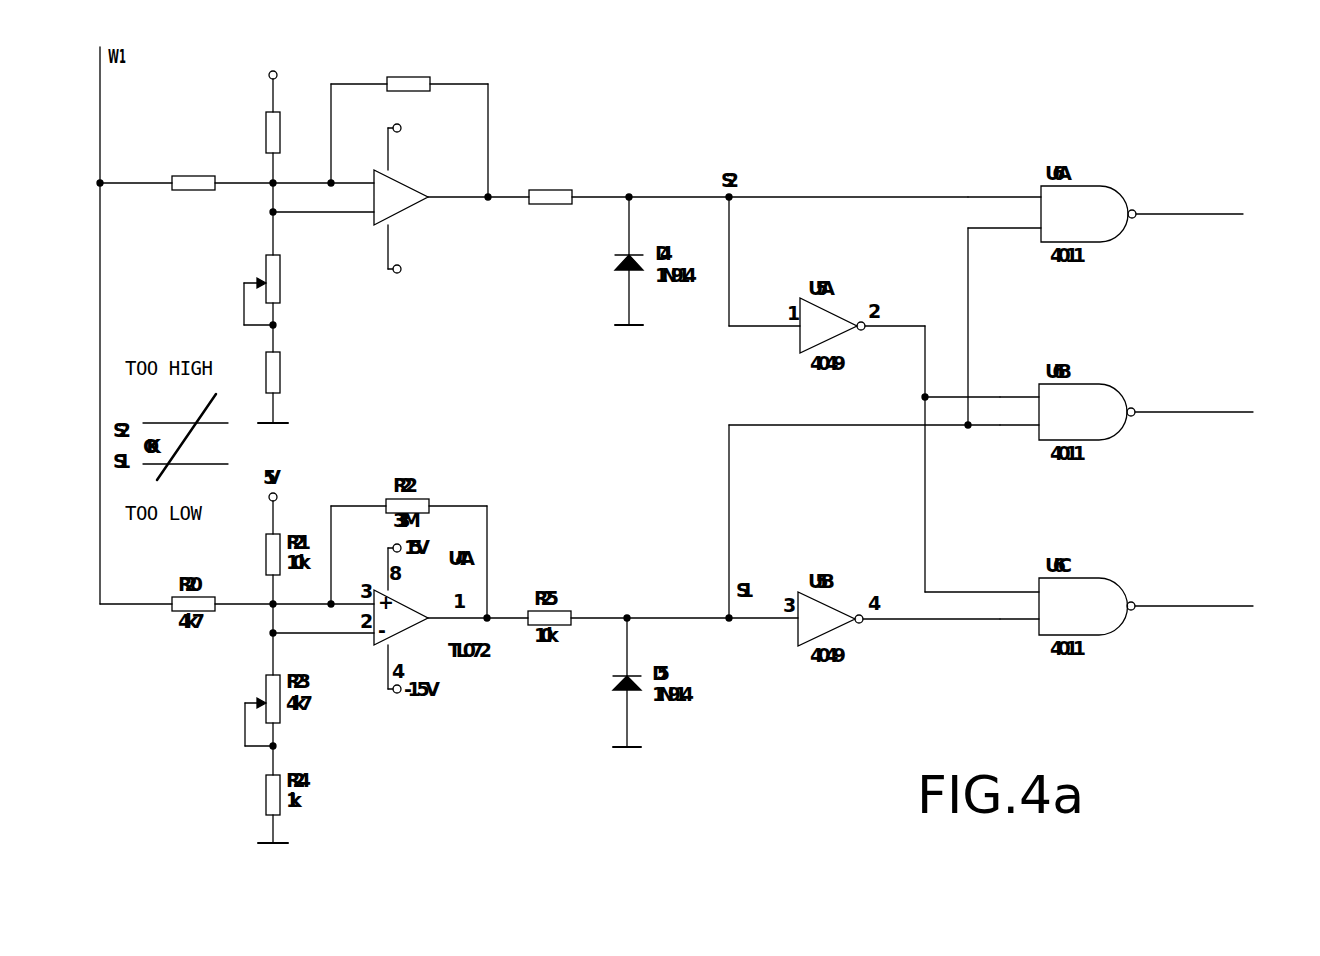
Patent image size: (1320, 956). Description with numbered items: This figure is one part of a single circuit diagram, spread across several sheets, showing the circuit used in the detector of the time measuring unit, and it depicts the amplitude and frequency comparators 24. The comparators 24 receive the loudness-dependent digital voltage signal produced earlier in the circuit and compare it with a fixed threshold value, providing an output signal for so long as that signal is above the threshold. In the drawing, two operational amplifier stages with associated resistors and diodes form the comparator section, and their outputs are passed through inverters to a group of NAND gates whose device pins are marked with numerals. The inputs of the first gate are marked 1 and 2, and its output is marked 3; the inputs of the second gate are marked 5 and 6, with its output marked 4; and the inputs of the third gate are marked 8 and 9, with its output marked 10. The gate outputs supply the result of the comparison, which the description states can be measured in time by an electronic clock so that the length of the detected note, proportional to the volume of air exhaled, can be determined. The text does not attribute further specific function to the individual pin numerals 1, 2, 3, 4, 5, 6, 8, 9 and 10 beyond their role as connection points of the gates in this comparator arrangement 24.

The amplitude and frequency comparators 24 is at (430, 422).
The NAND gate U6A input pin 1 is at (1004, 189).
The NAND gate U6A input pin 2 is at (1004, 219).
The NAND gate U6A output pin 3 is at (1191, 200).
The NAND gate U6B output pin 4 is at (1195, 398).
The NAND gate U6B input pin 5 is at (1020, 387).
The NAND gate U6B input pin 6 is at (1020, 416).
The NAND gate U6C input pin 8 is at (982, 581).
The NAND gate U6C input pin 9 is at (1020, 610).
The NAND gate U6C output pin 10 is at (1195, 592).